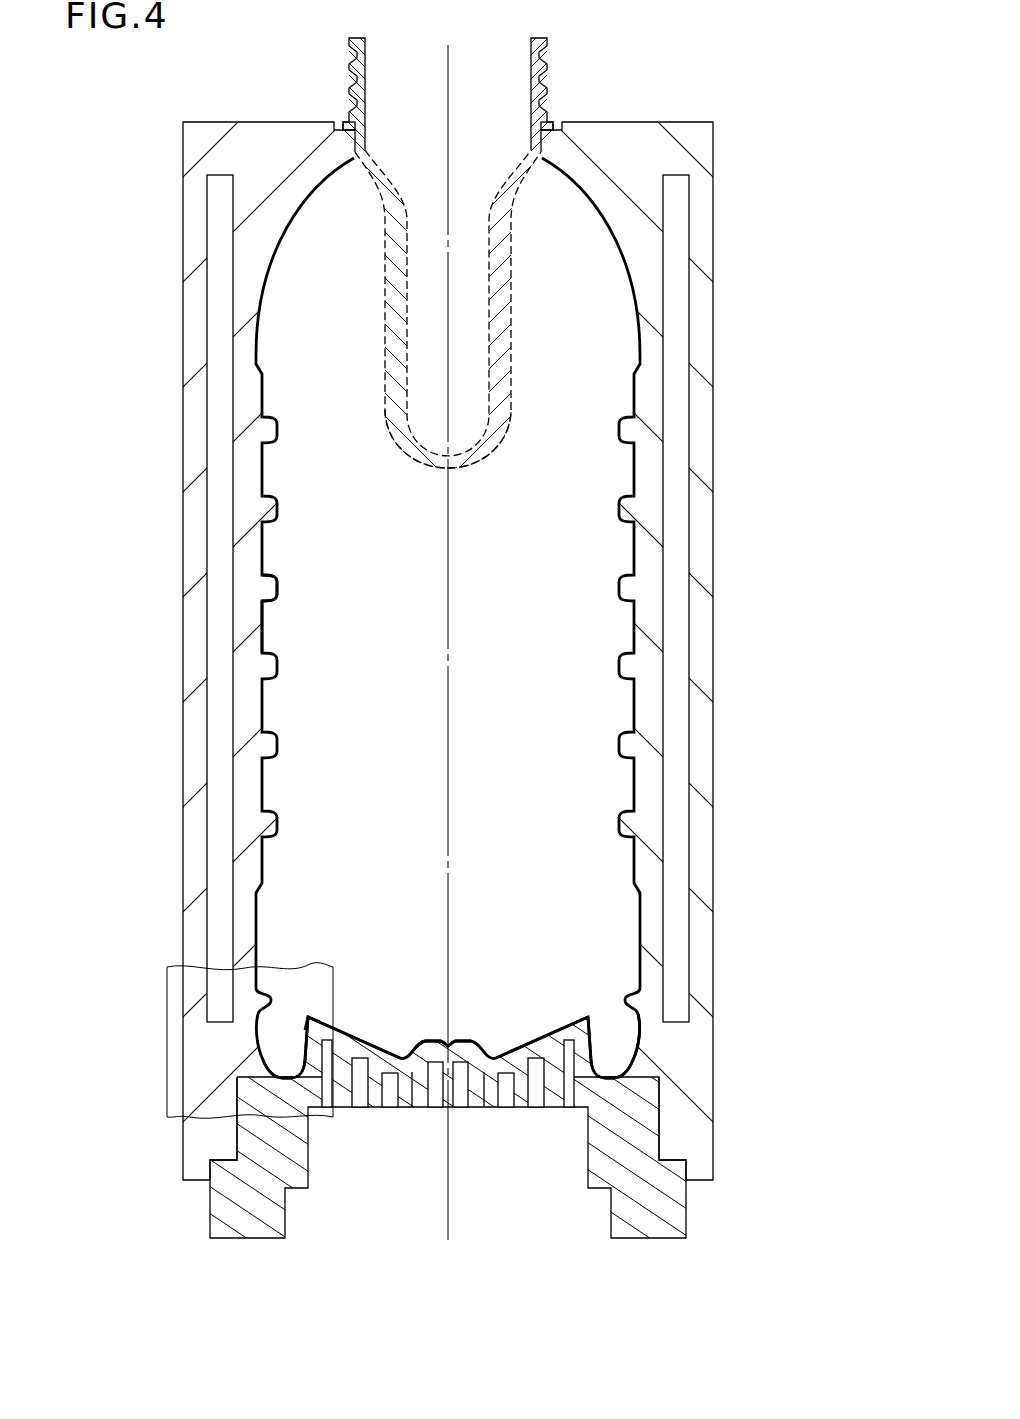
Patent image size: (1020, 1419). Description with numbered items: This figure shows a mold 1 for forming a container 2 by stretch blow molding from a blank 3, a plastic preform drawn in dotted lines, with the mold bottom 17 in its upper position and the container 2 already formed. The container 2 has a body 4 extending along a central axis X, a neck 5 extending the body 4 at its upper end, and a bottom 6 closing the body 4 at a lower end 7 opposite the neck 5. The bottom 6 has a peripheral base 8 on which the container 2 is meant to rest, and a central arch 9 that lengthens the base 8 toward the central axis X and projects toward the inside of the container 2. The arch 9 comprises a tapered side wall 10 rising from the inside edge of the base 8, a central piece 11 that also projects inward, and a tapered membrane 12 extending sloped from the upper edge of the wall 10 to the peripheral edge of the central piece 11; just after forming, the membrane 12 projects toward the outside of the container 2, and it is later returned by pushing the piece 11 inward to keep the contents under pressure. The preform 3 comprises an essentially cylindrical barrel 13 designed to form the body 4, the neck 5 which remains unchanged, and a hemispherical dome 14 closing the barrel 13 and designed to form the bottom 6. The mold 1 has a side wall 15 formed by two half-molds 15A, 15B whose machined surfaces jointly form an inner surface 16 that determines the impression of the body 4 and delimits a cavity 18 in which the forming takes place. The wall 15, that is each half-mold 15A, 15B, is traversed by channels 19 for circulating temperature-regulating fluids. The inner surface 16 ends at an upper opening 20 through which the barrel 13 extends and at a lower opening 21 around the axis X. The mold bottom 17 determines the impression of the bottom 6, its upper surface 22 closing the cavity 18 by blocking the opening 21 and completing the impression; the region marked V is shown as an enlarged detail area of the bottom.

The mold 1 is at (745, 421).
The container 2 is at (275, 702).
The blank 3 is at (523, 311).
The body 4 is at (265, 641).
The neck 5 is at (541, 54).
The bottom 6 is at (526, 1033).
The lower end 7 is at (261, 1066).
The peripheral base 8 is at (297, 1077).
The central arch 9 is at (298, 1000).
The tapered side wall 10 is at (308, 1028).
The central piece 11 is at (465, 1040).
The tapered membrane 12 is at (329, 1030).
The barrel 13 is at (398, 317).
The hemispherical dome 14 is at (412, 440).
The side wall 15 is at (724, 208).
The half-mold 15A is at (197, 318).
The half-mold 15B is at (695, 320).
The inner surface 16 is at (275, 561).
The mold bottom 17 is at (689, 1232).
The cavity 18 is at (401, 676).
The channels 19 is at (218, 676).
The opening 20 is at (357, 146).
The opening 21 is at (617, 1059).
The upper surface 22 is at (393, 1033).
The central axis X is at (452, 568).
The detail V is at (250, 1030).